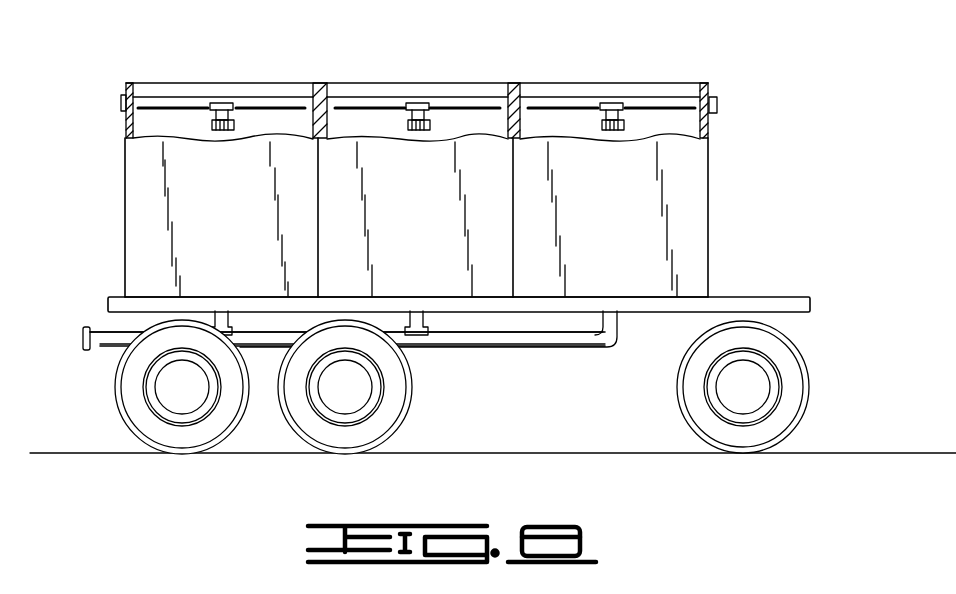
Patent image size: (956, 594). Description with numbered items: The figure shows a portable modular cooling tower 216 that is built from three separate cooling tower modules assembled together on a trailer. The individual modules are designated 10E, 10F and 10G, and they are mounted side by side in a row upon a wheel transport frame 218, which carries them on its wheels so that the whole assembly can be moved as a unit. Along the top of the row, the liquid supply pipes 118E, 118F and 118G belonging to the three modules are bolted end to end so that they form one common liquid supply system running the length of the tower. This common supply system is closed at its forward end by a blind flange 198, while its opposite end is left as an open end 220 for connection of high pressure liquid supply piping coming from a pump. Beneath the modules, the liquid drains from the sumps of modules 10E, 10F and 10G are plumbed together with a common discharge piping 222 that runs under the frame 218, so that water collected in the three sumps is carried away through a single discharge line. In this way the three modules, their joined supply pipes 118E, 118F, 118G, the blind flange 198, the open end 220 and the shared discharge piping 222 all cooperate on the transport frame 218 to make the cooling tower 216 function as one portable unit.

The portable modular cooling tower 216 is at (446, 232).
The wheel transport frame 218 is at (750, 302).
The open end 220 is at (121, 101).
The common discharge piping 222 is at (500, 337).
The blind flange 198 is at (717, 105).
The liquid supply pipe 118E is at (253, 104).
The liquid supply pipe 118F is at (363, 104).
The liquid supply pipe 118G is at (556, 104).
The cooling tower module 10E is at (240, 215).
The cooling tower module 10F is at (430, 222).
The cooling tower module 10G is at (628, 228).